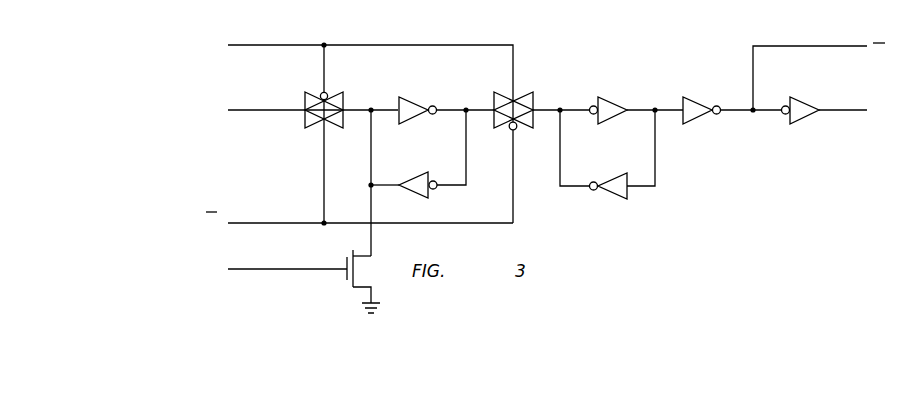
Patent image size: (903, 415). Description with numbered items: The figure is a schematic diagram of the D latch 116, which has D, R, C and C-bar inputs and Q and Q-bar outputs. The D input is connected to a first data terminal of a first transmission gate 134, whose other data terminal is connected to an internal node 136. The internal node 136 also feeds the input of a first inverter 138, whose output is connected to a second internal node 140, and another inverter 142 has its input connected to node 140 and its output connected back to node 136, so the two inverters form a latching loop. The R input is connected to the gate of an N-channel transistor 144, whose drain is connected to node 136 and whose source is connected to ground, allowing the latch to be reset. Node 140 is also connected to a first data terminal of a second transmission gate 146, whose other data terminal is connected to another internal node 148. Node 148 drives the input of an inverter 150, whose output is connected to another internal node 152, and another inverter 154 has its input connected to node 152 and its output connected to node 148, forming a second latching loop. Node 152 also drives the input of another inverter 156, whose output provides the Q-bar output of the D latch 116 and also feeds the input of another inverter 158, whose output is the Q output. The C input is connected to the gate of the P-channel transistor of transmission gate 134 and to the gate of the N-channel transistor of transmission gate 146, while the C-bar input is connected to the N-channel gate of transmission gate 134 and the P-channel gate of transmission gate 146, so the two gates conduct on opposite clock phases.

The D latch 116 is at (180, 48).
The first transmission gate 134 is at (305, 122).
The internal node 136 is at (371, 103).
The first inverter 138 is at (420, 124).
The second internal node 140 is at (466, 103).
The inverter 142 is at (437, 191).
The N-channel transistor 144 is at (345, 276).
The second transmission gate 146 is at (525, 92).
The internal node 148 is at (560, 103).
The inverter 150 is at (607, 124).
The internal node 152 is at (655, 103).
The inverter 154 is at (612, 200).
The inverter 156 is at (700, 123).
The inverter 158 is at (801, 98).